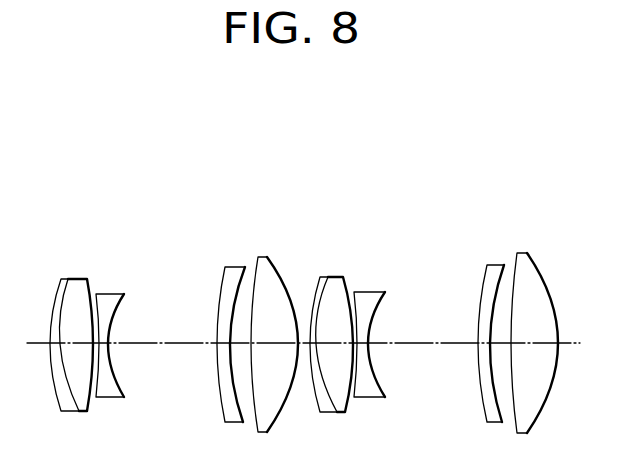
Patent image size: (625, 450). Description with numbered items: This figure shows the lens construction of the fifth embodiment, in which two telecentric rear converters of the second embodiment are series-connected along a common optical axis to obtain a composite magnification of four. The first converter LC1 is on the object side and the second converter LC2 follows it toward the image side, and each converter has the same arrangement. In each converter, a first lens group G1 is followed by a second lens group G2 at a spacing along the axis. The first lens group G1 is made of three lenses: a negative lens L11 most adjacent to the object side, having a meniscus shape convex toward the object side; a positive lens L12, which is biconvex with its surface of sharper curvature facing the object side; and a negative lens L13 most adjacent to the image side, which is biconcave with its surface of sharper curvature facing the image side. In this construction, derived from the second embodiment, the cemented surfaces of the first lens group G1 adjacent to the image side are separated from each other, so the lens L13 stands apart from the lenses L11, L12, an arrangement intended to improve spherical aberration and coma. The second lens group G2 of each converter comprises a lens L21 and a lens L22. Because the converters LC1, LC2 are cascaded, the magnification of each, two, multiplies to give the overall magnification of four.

The first telecentric rear converter LC1 is at (275, 137).
The second telecentric rear converter LC2 is at (542, 137).
The first lens group G1 is at (152, 185).
The second lens group G2 is at (283, 185).
The negative meniscus lens L11 is at (67, 278).
The biconvex positive lens L12 is at (78, 279).
The biconcave negative lens L13 is at (115, 294).
The first lens of second lens group L21 is at (232, 267).
The second lens of second lens group L22 is at (262, 257).